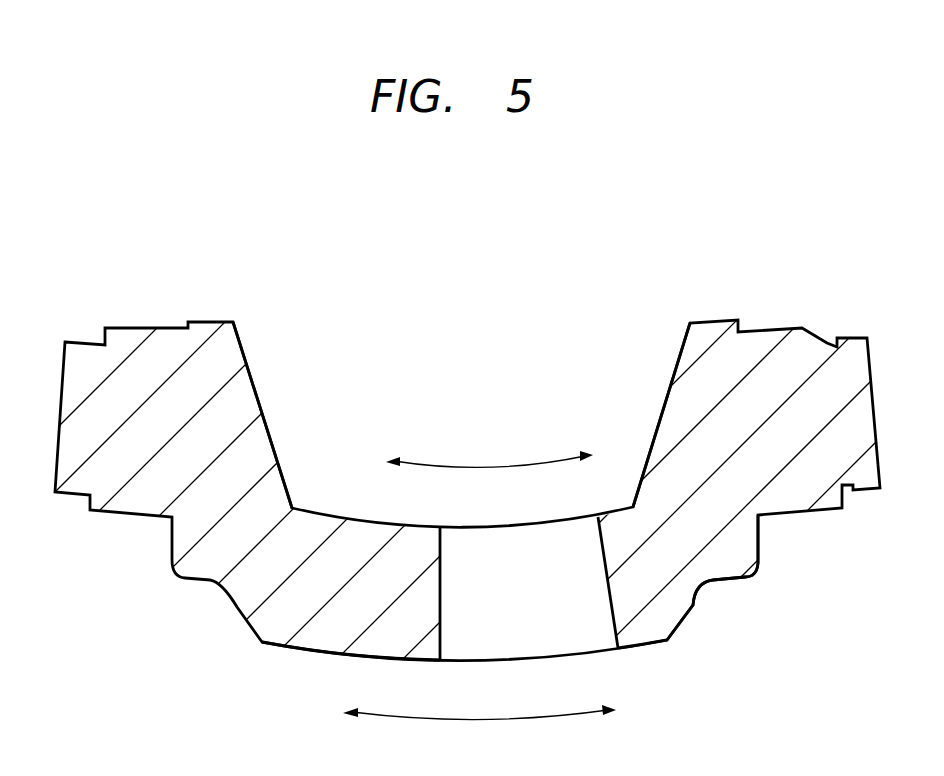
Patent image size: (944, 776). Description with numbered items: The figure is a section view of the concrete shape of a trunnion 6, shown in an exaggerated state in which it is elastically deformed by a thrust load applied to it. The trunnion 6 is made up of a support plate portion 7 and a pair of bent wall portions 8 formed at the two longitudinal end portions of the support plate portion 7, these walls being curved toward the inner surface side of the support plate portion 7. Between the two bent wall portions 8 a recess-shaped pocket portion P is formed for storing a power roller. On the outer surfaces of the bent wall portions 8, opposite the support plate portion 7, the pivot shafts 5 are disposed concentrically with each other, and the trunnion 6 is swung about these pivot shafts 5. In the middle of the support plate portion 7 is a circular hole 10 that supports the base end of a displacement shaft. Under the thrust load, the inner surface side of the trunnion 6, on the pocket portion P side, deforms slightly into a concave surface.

The pivot shaft 5 is at (122, 336).
The trunnion 6 is at (312, 626).
The support plate portion 7 is at (675, 615).
The bent wall portion 8 is at (222, 342).
The circular hole 10 is at (608, 606).
The pocket portion P is at (478, 391).